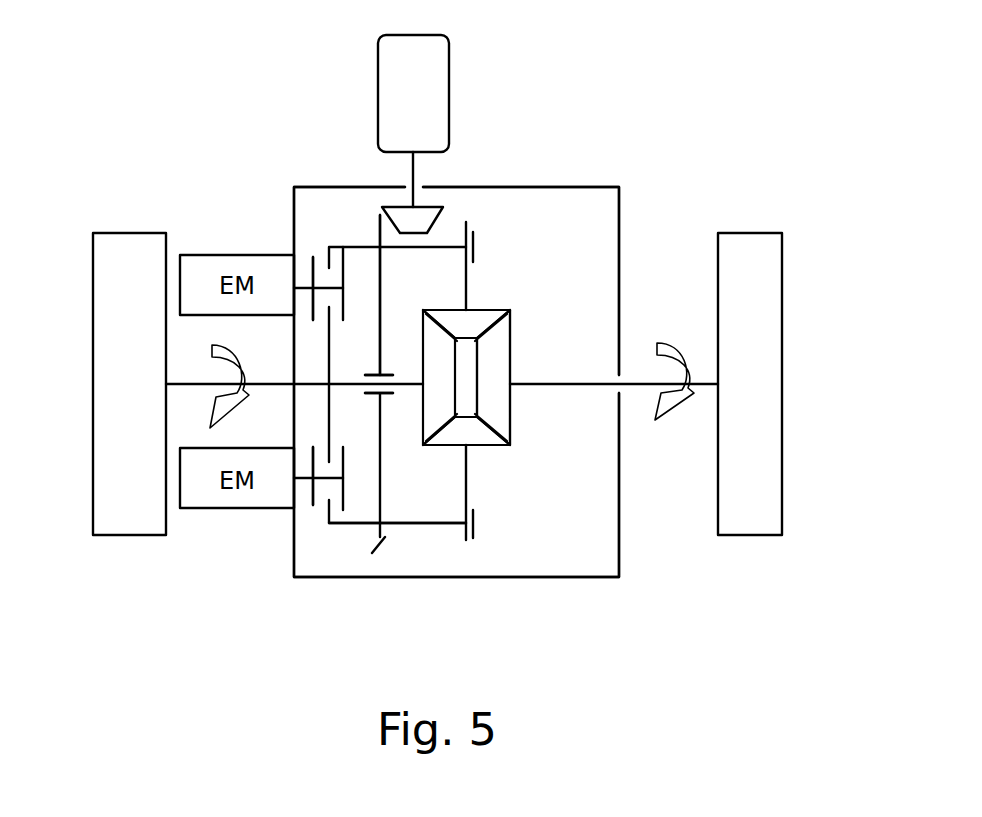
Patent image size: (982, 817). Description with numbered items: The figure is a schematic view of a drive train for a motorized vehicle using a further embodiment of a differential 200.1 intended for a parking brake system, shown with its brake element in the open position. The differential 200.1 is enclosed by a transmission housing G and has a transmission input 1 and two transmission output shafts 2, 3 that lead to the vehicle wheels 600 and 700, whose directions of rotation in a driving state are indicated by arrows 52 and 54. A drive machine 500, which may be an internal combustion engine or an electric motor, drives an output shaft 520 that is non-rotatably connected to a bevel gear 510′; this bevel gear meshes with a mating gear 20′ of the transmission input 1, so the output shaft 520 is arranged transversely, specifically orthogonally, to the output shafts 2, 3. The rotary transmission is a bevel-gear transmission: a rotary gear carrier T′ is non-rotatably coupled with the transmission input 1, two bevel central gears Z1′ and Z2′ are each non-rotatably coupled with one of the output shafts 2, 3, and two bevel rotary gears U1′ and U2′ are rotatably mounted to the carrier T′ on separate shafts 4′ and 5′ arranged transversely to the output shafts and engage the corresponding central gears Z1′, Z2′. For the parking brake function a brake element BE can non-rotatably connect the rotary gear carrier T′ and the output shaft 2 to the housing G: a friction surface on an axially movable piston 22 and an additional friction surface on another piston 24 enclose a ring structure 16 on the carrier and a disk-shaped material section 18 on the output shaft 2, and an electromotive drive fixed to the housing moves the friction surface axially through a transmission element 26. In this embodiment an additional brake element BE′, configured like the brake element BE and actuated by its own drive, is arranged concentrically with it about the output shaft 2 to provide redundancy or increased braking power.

The transmission input 1 is at (360, 212).
The transmission output shaft 2 is at (205, 384).
The transmission output shaft 3 is at (653, 386).
The ring structure 16 is at (328, 250).
The material section 18 is at (330, 393).
The mating gear 20′ is at (380, 214).
The piston 22 is at (343, 257).
The piston 24 is at (313, 257).
The transmission element 26 is at (294, 313).
The arrow 52 is at (240, 372).
The arrow 54 is at (681, 420).
The differential 200.1 is at (646, 216).
The drive machine 500 is at (413, 93).
The bevel gear 510′ is at (441, 218).
The output shaft 520 is at (416, 162).
The vehicle wheel 600 is at (131, 537).
The vehicle wheel 700 is at (752, 537).
The transmission housing G is at (622, 540).
The brake element BE is at (311, 335).
The additional brake element BE′ is at (310, 526).
The rotary gear carrier T′ is at (368, 524).
The central gear Z1′ is at (437, 425).
The central gear Z2′ is at (498, 402).
The rotary gear U1′ is at (490, 316).
The rotary gear U2′ is at (485, 442).
The shaft 4′ is at (465, 274).
The shaft 5′ is at (471, 540).